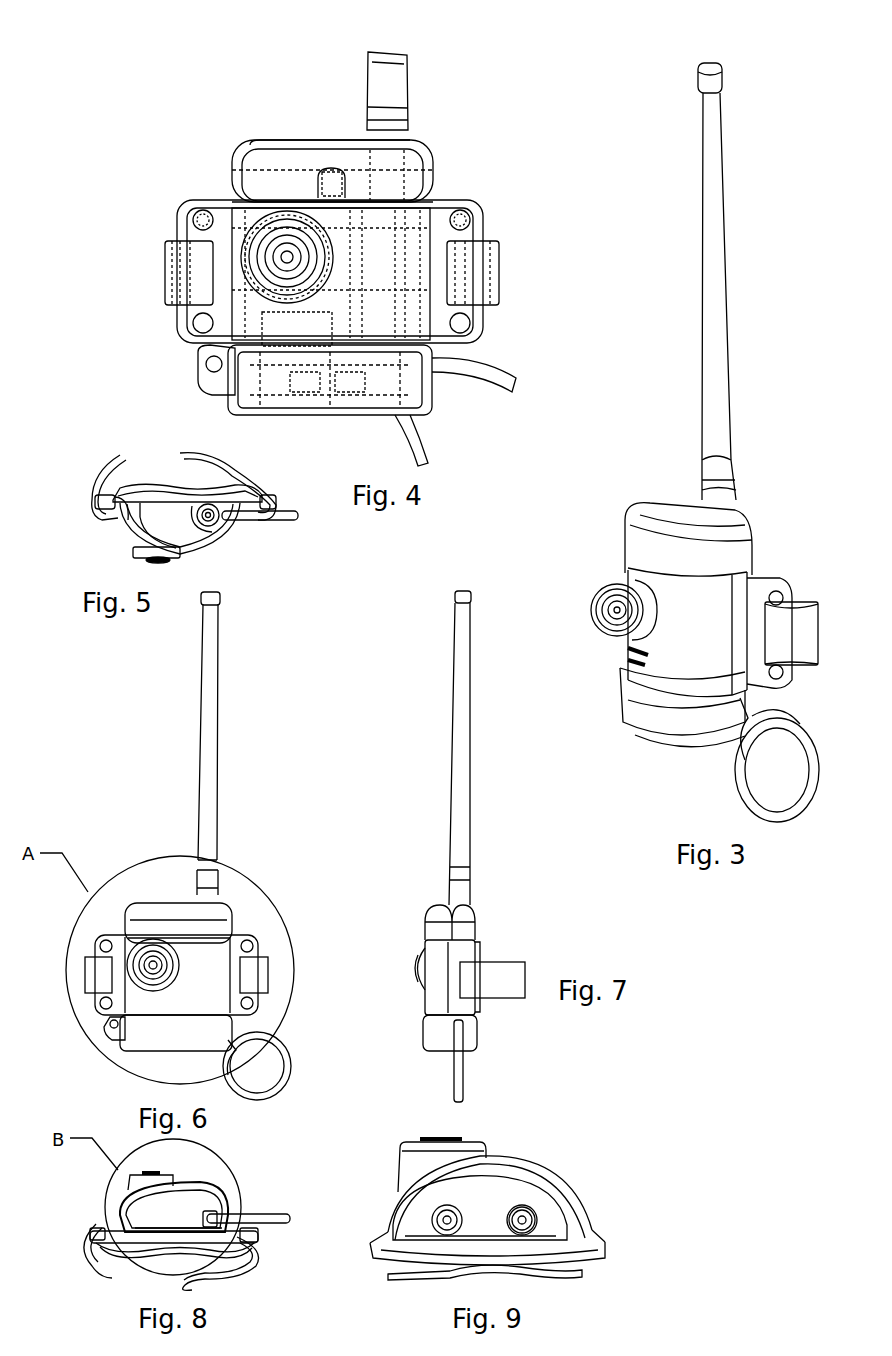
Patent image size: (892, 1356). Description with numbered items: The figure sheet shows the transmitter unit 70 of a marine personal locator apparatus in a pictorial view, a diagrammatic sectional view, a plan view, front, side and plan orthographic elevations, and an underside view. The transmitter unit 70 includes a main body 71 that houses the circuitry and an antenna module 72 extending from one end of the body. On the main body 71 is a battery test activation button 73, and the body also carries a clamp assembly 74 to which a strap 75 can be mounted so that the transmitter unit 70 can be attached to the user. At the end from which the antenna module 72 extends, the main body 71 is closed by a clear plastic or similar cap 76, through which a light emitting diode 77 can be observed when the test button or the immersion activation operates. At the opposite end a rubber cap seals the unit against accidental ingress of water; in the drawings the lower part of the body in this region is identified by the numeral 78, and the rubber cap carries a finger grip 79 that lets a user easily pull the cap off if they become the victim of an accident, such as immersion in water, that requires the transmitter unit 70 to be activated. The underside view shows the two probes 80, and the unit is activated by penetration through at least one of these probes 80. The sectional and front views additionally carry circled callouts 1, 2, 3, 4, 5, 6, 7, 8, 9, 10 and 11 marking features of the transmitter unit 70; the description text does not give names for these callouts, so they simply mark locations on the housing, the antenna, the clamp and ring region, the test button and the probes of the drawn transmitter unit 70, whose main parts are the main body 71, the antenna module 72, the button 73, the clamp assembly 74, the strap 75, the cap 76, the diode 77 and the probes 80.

In FIG. 6, the housing body 1 is at (210, 960).
In FIG. 4, the housing seam 2 is at (278, 192).
In FIG. 6, the top cover 3 is at (165, 912).
In FIG. 6, the ring 4 is at (297, 1043).
In FIG. 6, the antenna 5 is at (210, 771).
In FIG. 7, the clip fastener 6 is at (515, 984).
In FIG. 4, the battery test label 7 is at (347, 330).
In FIG. 4, the knob 8 is at (262, 244).
In FIG. 9, the knob 8 is at (449, 1140).
In FIG. 9, the base housing 9 is at (482, 1152).
In FIG. 9, the contact 10 is at (530, 1213).
In FIG. 4, the button 11 is at (328, 186).
In FIG. 4, the transmitter unit 70 is at (478, 100).
In FIG. 5, the transmitter unit 70 is at (137, 432).
In FIG. 6, the transmitter unit 70 is at (100, 782).
In FIG. 7, the transmitter unit 70 is at (494, 856).
In FIG. 8, the transmitter unit 70 is at (256, 1180).
In FIG. 4, the main body 71 is at (428, 150).
In FIG. 5, the main body 71 is at (196, 542).
In FIG. 3, the main body 71 is at (738, 540).
In FIG. 6, the main body 71 is at (147, 925).
In FIG. 7, the main body 71 is at (440, 915).
In FIG. 8, the main body 71 is at (180, 1210).
In FIG. 5, the antenna module 72 is at (222, 522).
In FIG. 3, the antenna module 72 is at (722, 245).
In FIG. 6, the antenna module 72 is at (210, 842).
In FIG. 7, the antenna module 72 is at (465, 763).
In FIG. 8, the antenna module 72 is at (256, 1217).
In FIG. 5, the battery test activation button 73 is at (160, 563).
In FIG. 3, the battery test activation button 73 is at (612, 640).
In FIG. 5, the clamp assembly 74 is at (126, 522).
In FIG. 3, the clamp assembly 74 is at (760, 594).
In FIG. 5, the strap 75 is at (254, 470).
In FIG. 3, the strap 75 is at (797, 670).
In FIG. 7, the strap 75 is at (481, 968).
In FIG. 4, the cap 76 is at (312, 148).
In FIG. 4, the light emitting diode 77 is at (342, 182).
In FIG. 3, the lower housing 78 is at (685, 738).
In FIG. 3, the finger grip 79 is at (785, 736).
In FIG. 9, the probes 80 is at (523, 1208).